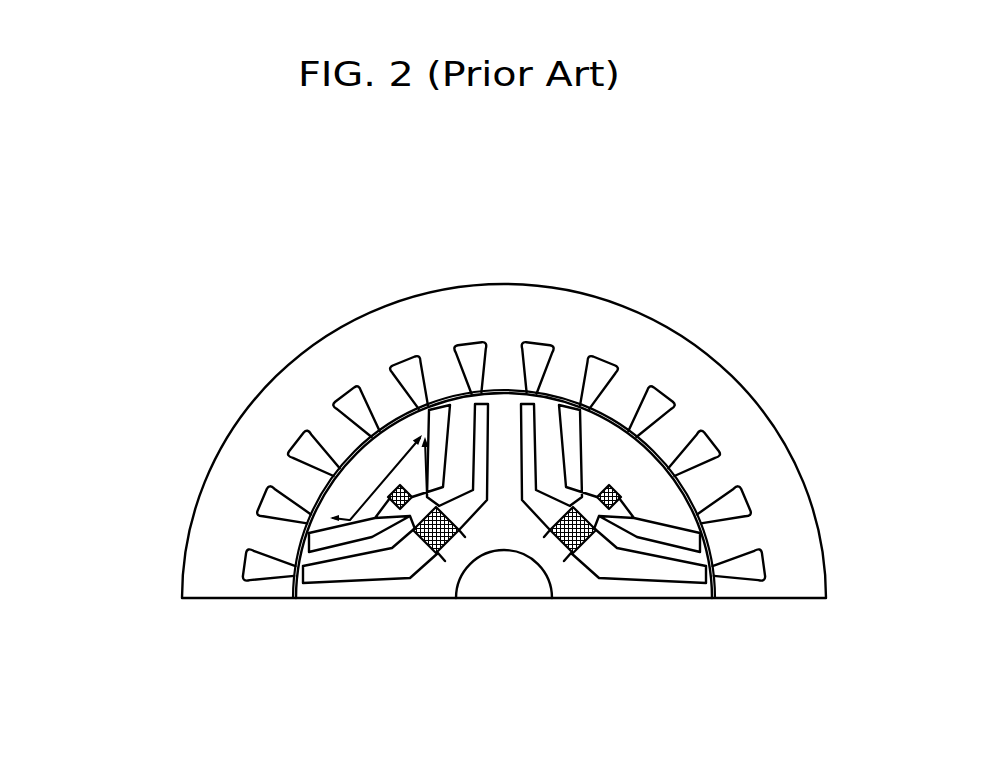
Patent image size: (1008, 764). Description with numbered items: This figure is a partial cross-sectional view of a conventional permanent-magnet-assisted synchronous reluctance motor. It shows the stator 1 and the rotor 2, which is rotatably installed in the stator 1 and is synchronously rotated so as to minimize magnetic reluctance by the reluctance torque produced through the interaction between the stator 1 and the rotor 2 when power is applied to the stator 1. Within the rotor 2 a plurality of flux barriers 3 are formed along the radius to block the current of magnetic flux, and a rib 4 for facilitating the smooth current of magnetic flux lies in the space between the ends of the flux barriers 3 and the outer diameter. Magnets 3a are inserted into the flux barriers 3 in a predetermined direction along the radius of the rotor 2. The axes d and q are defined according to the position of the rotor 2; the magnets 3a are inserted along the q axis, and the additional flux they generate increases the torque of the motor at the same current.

The stator 1 is at (466, 312).
The rotor 2 is at (438, 582).
The flux barriers 3 is at (703, 513).
The magnets 3a is at (602, 480).
The rib 4 is at (563, 390).
The q axis q is at (312, 411).
The d axis d is at (158, 599).